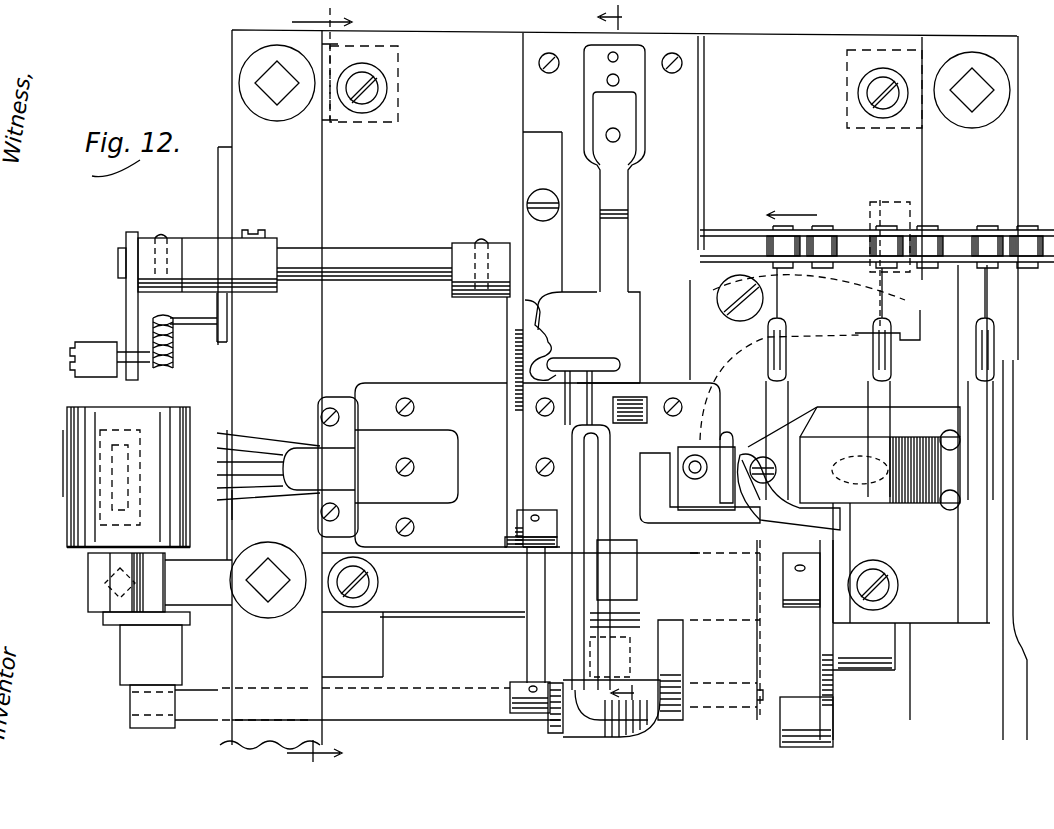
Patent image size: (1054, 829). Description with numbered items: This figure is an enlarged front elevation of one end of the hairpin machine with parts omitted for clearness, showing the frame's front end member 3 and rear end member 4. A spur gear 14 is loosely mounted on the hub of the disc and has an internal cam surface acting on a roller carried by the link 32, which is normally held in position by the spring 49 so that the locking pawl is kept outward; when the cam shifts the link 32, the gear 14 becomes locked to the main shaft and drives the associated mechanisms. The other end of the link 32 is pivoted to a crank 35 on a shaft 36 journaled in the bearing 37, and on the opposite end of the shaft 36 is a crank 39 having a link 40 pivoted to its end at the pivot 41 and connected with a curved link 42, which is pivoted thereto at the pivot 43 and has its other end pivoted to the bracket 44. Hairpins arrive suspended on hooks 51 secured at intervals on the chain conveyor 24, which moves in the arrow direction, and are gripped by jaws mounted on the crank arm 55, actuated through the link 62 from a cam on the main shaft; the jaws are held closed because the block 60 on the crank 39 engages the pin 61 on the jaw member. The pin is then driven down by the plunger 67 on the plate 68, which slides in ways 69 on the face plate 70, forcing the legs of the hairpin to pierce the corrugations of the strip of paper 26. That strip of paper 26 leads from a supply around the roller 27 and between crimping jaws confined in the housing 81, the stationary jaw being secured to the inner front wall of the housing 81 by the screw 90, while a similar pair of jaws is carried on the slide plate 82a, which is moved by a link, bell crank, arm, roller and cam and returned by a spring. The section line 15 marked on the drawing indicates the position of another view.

The front end member 3 is at (308, 174).
The rear end member 4 is at (1015, 163).
The spur gear 14 is at (319, 381).
The section line 15 is at (623, 350).
The face plate 70 is at (778, 43).
The plate 68 is at (643, 98).
The plunger 67 is at (613, 218).
The ways 69 is at (598, 247).
The bearing 37 is at (266, 242).
The shaft 36 is at (376, 279).
The crank 35 is at (126, 306).
The link 32 is at (116, 343).
The spring 49 is at (172, 346).
The roller 27 is at (70, 409).
The strip of paper 26 is at (67, 470).
The housing 81 is at (418, 438).
The screw 90 is at (412, 470).
The crank 39 is at (512, 329).
The block 60 is at (543, 334).
The pin 61 is at (553, 361).
The crank arm 55 is at (575, 490).
The slide plate 82a is at (725, 441).
The chain conveyor 24 is at (841, 238).
The hooks 51 is at (787, 302).
The bracket 44 is at (747, 671).
The pivot 41 is at (518, 549).
The link 40 is at (527, 631).
The pivot 43 is at (537, 719).
The curved link 42 is at (581, 729).
The link 62 is at (603, 683).